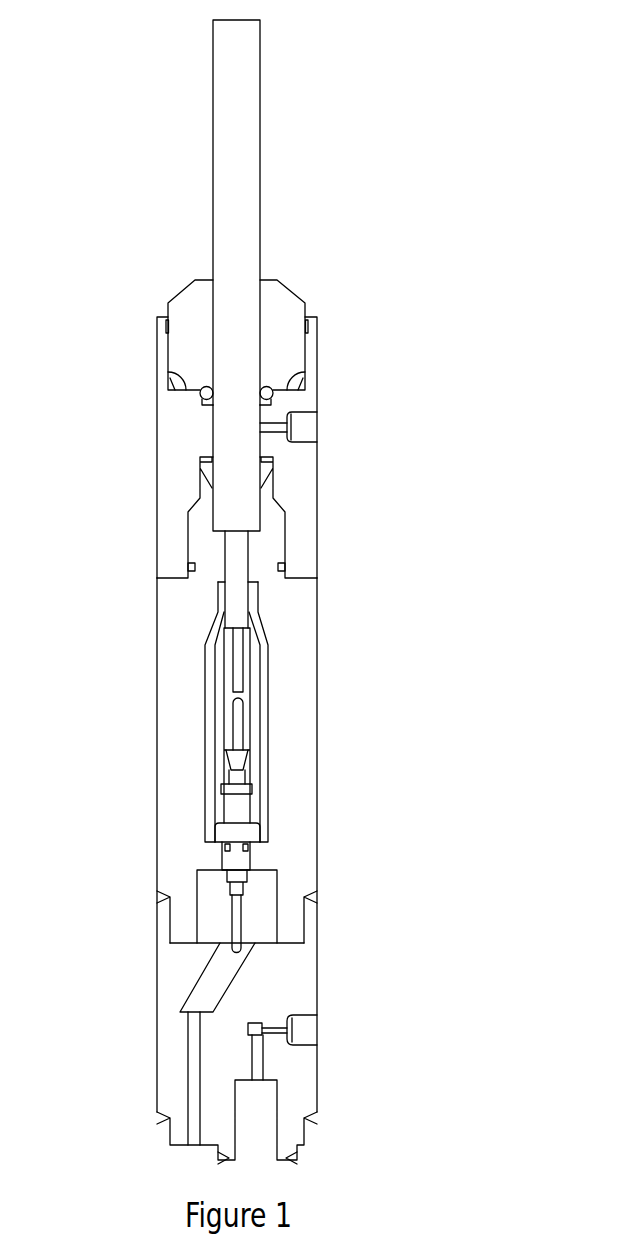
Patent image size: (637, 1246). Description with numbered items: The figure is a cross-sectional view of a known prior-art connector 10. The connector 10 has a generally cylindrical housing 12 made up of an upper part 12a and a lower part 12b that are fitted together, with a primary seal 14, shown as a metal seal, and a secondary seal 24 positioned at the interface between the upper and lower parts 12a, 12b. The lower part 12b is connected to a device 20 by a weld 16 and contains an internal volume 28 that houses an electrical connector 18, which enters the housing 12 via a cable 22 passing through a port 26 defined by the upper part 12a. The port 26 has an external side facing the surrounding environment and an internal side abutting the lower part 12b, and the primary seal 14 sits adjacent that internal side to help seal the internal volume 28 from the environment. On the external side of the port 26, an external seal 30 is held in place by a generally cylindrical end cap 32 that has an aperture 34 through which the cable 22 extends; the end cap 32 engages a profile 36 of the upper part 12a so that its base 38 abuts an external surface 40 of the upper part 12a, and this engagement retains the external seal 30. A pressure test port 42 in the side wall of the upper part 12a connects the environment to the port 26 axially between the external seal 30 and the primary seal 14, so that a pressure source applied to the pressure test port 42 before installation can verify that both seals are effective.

The connector 10 is at (443, 290).
The housing 12 is at (115, 531).
The upper part of the housing 12a is at (317, 328).
The lower part of the housing 12b is at (285, 690).
The primary seal 14 is at (272, 479).
The weld 16 is at (315, 895).
The electrical connector 18 is at (222, 805).
The device 20 is at (165, 997).
The cable 22 is at (240, 68).
The secondary seal 24 is at (280, 568).
The port 26 is at (213, 427).
The internal volume 28 is at (217, 625).
The external seal 30 is at (270, 397).
The end cap 32 is at (285, 300).
The aperture 34 is at (220, 303).
The profile 36 is at (168, 342).
The base 38 is at (168, 374).
The external surface 40 is at (283, 385).
The pressure test port 42 is at (303, 427).